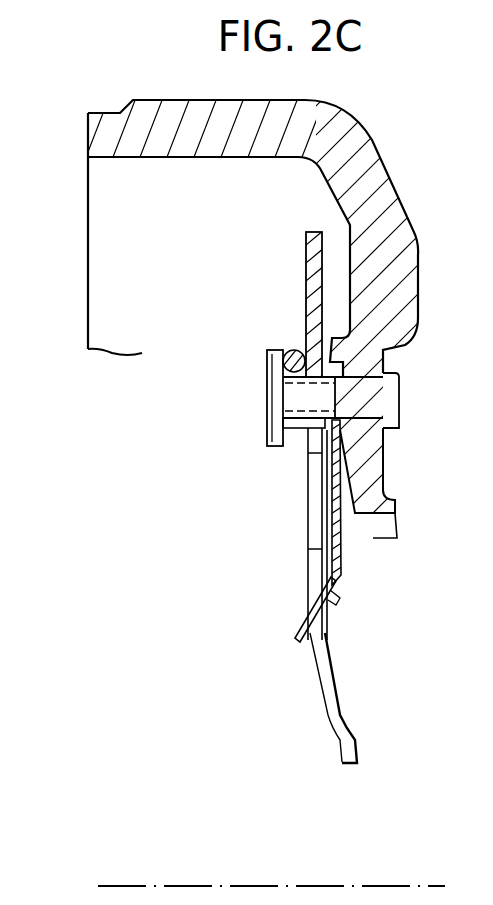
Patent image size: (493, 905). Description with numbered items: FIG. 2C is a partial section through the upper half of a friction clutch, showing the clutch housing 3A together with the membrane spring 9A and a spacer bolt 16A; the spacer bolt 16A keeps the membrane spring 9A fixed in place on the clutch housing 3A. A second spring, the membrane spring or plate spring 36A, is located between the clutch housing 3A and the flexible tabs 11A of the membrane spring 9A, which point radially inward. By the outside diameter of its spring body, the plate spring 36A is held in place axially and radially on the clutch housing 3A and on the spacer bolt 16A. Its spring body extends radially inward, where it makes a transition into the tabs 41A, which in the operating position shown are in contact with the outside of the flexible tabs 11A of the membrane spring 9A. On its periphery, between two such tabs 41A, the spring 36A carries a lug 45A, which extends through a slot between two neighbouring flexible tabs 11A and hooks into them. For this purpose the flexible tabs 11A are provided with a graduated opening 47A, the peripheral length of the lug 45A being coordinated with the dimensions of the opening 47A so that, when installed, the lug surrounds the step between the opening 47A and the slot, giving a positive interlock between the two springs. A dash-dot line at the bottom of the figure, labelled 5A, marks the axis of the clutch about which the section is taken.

The clutch housing 3A is at (345, 150).
The membrane spring 9A is at (312, 279).
The spacer bolt 16A is at (370, 395).
The membrane spring/plate spring 36A is at (324, 473).
The graduated opening 47A is at (312, 562).
The lug 45A is at (300, 631).
The tab 41A is at (347, 617).
The flexible tab 11A is at (338, 742).
The center line 5A is at (266, 882).